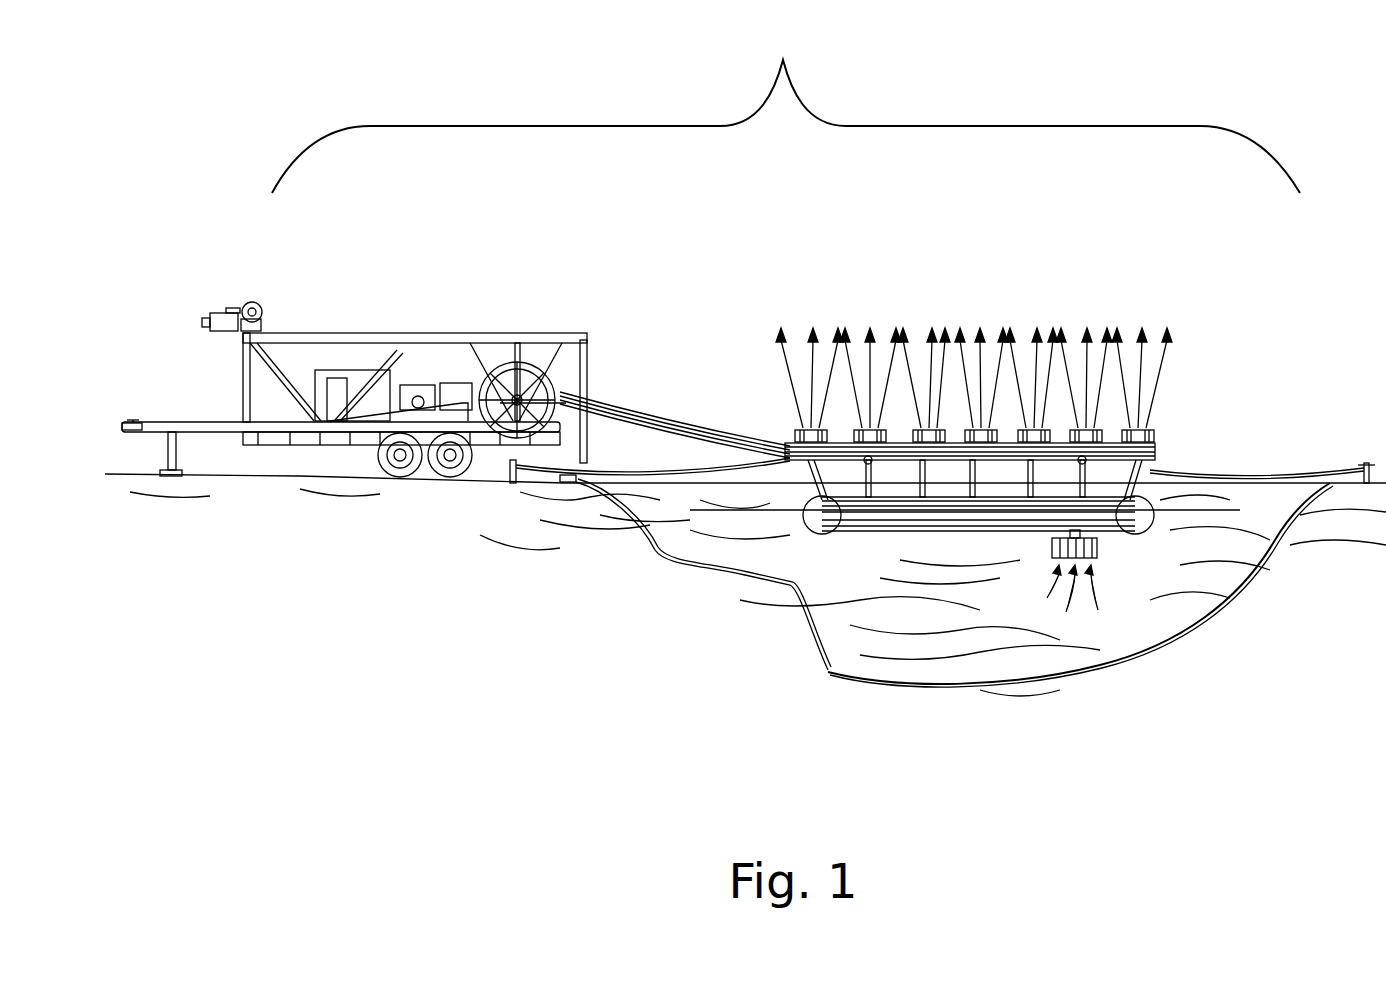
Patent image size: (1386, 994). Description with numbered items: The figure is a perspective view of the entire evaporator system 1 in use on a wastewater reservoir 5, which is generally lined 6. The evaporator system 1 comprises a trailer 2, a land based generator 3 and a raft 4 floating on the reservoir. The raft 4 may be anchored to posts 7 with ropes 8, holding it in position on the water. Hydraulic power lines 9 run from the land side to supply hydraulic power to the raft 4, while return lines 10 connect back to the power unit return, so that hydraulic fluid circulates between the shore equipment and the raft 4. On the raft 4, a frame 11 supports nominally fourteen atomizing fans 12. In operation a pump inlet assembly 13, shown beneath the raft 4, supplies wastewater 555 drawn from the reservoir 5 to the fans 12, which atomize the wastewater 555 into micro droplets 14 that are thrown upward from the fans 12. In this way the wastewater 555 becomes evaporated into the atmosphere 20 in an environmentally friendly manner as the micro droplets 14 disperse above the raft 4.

The evaporator system 1 is at (786, 108).
The atmosphere 20 is at (1082, 84).
The trailer 2 is at (197, 421).
The land based generator 3 is at (448, 387).
The raft 4 is at (1001, 548).
The wastewater reservoir 5 is at (1205, 576).
The liner 6 is at (1178, 642).
The posts 7 is at (512, 470).
The ropes 8 is at (663, 478).
The hydraulic power lines 9 is at (697, 456).
The return lines 10 is at (650, 417).
The frame 11 is at (869, 466).
The atomizing fans 12 is at (927, 440).
The pump inlet assembly 13 is at (1053, 557).
The micro droplets 14 is at (815, 353).
The wastewater 555 is at (1068, 598).